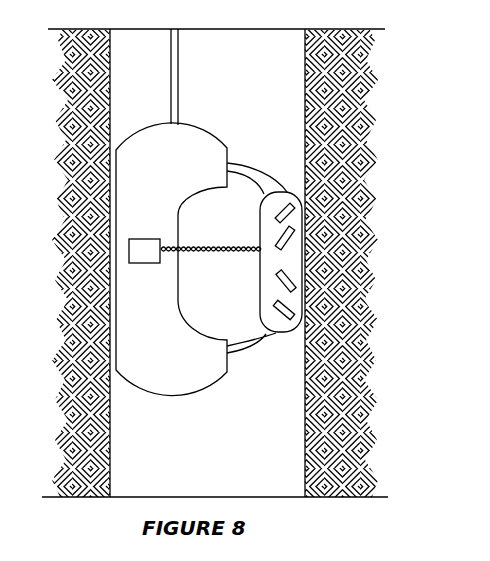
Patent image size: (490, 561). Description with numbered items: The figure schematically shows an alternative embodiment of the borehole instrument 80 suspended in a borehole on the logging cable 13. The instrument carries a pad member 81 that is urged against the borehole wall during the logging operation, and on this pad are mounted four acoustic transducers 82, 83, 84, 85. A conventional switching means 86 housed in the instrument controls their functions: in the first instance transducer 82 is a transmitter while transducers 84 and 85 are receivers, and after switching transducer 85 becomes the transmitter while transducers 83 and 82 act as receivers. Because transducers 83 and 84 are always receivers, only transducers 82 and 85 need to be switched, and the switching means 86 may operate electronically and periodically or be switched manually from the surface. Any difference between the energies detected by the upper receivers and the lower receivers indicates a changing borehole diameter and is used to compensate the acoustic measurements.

The logging cable 13 is at (178, 63).
The borehole instrument 80 is at (208, 130).
The pad member 81 is at (282, 193).
The acoustic transducer 82 is at (292, 219).
The acoustic transducer 83 is at (290, 235).
The acoustic transducer 84 is at (290, 272).
The acoustic transducer 85 is at (290, 310).
The switching means 86 is at (129, 255).